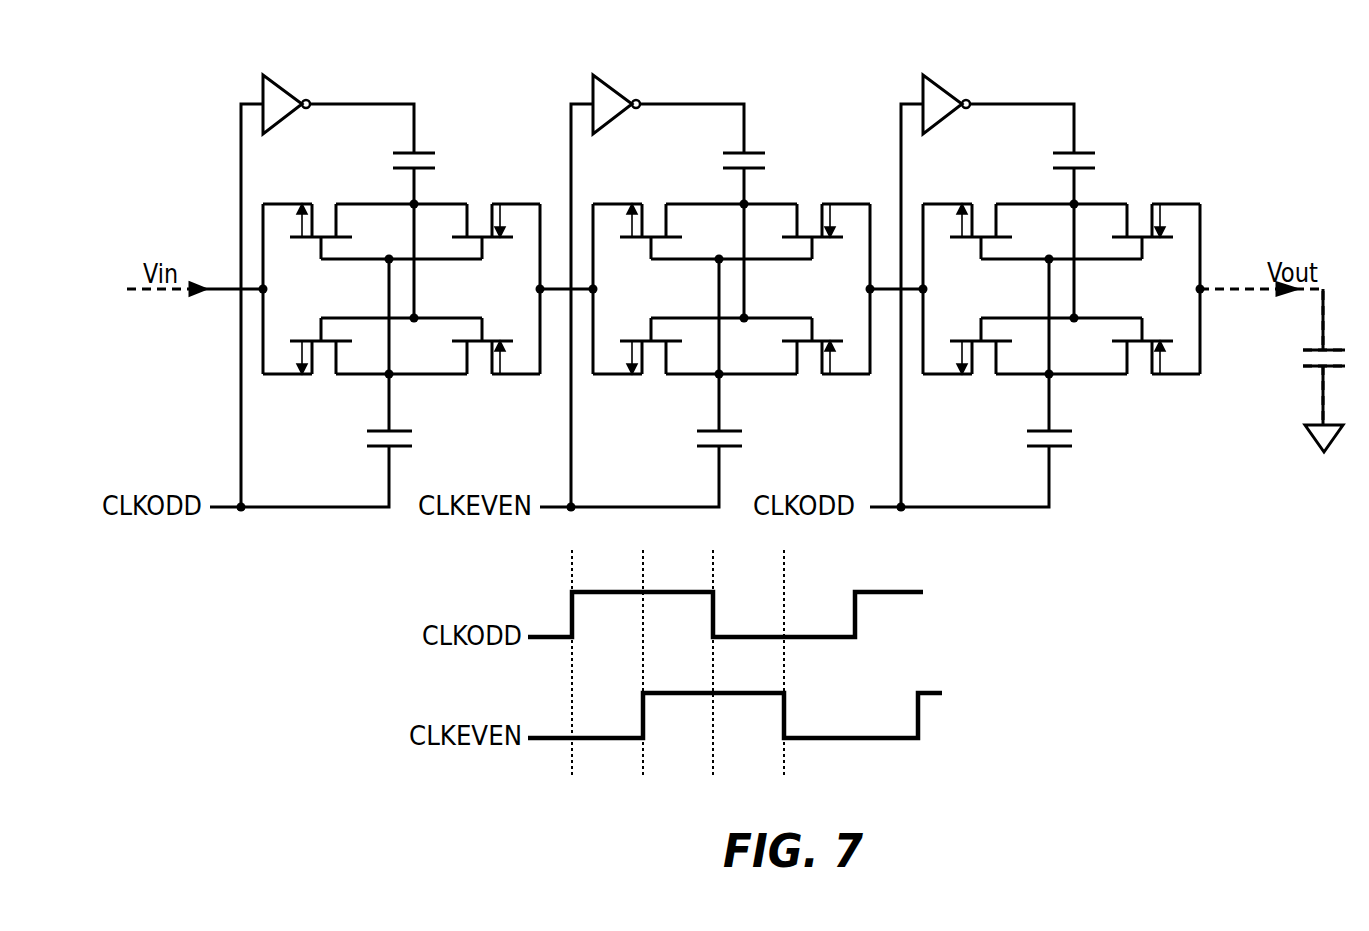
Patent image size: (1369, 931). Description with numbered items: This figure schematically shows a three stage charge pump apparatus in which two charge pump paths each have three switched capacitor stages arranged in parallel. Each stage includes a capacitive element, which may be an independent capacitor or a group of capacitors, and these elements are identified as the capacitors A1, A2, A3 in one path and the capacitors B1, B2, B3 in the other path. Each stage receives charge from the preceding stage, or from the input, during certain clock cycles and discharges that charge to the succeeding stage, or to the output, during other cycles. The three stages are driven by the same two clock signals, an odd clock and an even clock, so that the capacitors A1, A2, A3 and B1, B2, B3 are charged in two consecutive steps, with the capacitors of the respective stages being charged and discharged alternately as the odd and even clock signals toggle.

The capacitor A1 is at (410, 439).
The capacitor A2 is at (740, 439).
The capacitor A3 is at (1070, 439).
The capacitor B1 is at (434, 162).
The capacitor B2 is at (764, 162).
The capacitor B3 is at (1094, 162).